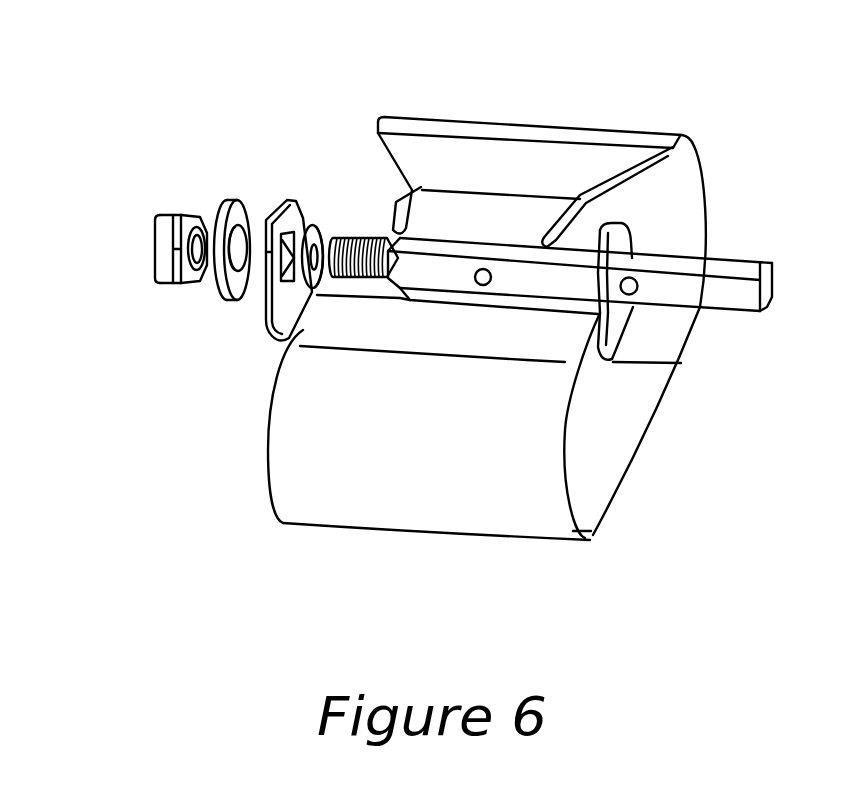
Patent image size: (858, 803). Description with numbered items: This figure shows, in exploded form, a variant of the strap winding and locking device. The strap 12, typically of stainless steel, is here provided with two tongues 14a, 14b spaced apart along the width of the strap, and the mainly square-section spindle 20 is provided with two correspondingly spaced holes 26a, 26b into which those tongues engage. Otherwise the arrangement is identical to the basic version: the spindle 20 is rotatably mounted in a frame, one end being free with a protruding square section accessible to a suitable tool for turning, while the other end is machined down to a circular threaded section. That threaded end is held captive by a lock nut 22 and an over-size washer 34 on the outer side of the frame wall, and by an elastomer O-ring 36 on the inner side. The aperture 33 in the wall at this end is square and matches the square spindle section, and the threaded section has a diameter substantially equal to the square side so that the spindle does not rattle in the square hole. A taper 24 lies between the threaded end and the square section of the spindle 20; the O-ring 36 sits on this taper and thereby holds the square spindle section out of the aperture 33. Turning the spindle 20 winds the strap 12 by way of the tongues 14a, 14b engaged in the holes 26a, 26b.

The strap 12 is at (283, 522).
The tongue 14a is at (392, 233).
The tongue 14b is at (565, 208).
The spindle 20 is at (760, 311).
The lock nut 22 is at (160, 274).
The taper 24 is at (383, 233).
The hole 26a is at (483, 286).
The hole 26b is at (622, 293).
The aperture 33 is at (275, 232).
The over-size washer 34 is at (224, 298).
The O-ring 36 is at (302, 203).